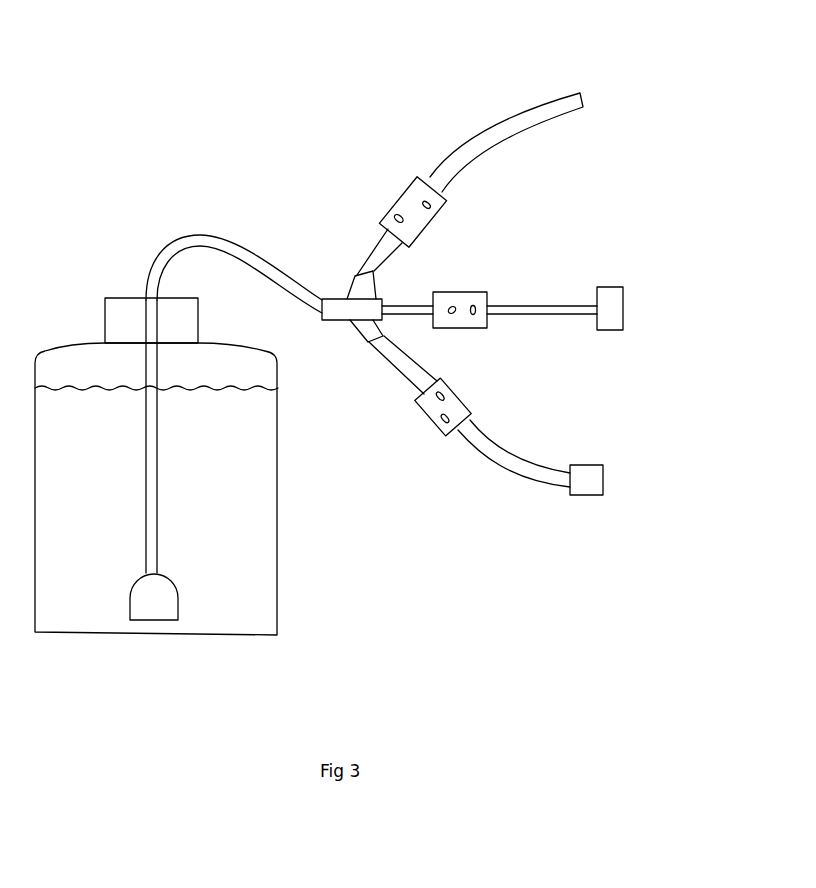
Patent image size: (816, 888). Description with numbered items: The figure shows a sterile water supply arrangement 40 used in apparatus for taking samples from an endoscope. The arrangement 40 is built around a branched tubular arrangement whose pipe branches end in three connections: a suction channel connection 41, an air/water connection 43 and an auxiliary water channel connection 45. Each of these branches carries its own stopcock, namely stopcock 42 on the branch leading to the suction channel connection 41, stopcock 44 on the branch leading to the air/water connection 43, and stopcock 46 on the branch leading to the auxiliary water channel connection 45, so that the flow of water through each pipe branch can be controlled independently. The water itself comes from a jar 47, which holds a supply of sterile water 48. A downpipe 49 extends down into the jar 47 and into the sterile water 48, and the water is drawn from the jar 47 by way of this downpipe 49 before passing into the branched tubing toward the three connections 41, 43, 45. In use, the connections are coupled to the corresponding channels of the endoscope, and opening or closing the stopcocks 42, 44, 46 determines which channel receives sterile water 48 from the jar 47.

The sterile water supply arrangement 40 is at (253, 127).
The suction channel connection 41 is at (565, 92).
The stopcock 42 is at (407, 225).
The air/water connection 43 is at (618, 287).
The stopcock 44 is at (450, 307).
The auxiliary water channel connection 45 is at (593, 468).
The stopcock 46 is at (448, 393).
The jar 47 is at (87, 347).
The sterile water 48 is at (92, 492).
The downpipe 49 is at (163, 587).